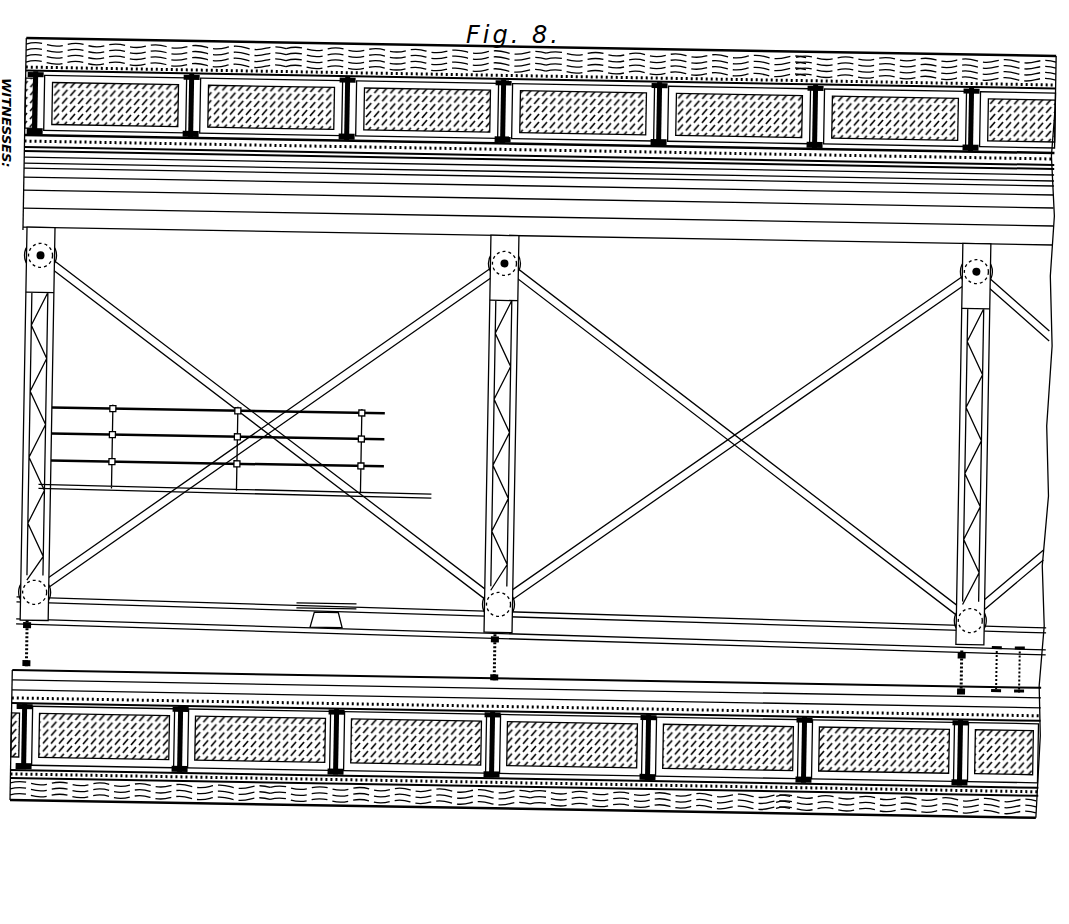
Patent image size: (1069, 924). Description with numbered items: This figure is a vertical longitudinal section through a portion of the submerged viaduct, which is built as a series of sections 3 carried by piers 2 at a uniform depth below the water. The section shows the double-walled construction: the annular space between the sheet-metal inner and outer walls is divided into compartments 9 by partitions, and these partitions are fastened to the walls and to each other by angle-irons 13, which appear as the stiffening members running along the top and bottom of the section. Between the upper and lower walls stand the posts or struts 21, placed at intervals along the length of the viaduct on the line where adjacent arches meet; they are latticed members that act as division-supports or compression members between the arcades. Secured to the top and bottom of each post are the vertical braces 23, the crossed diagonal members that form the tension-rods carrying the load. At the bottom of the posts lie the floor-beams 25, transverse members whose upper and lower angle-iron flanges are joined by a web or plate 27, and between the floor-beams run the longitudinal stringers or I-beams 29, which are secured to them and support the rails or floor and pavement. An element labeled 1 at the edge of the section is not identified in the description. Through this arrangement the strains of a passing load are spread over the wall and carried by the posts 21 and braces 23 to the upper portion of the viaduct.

The rivet strip 1 is at (1042, 69).
The piers 2 is at (1040, 50).
The sections 3 is at (1040, 146).
The compartments 9 is at (1056, 109).
The angle-irons 13 is at (1056, 129).
The posts or struts 21 is at (47, 527).
The vertical braces 23 is at (185, 362).
The floor-beams 25 is at (29, 625).
The web or plate 27 is at (34, 637).
The longitudinal stringers or I-beams 29 is at (530, 637).